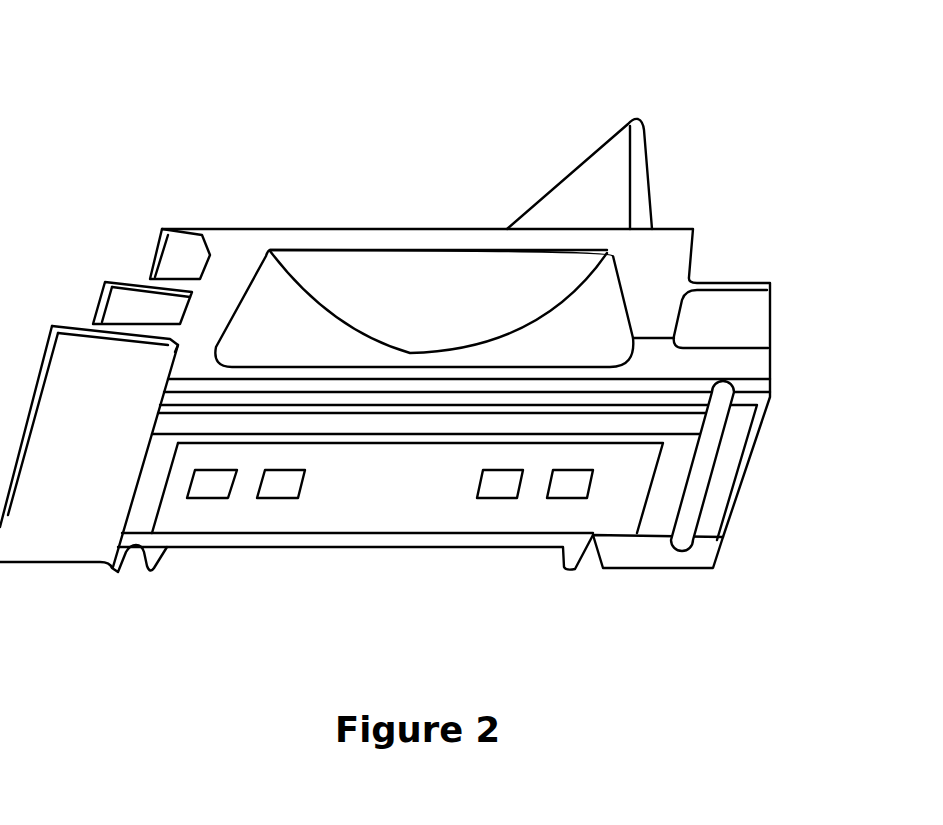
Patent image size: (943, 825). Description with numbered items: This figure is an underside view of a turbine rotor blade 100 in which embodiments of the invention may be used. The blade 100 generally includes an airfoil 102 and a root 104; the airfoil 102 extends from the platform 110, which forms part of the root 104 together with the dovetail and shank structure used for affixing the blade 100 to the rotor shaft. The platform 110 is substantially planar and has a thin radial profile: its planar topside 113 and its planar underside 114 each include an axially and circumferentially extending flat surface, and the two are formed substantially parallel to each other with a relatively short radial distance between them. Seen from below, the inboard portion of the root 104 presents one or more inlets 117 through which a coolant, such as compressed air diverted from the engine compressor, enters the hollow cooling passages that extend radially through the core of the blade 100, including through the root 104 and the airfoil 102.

The turbine rotor blade 100 is at (150, 103).
The platform 110 is at (185, 217).
The topside 113 is at (318, 228).
The airfoil 102 is at (600, 173).
The underside 114 is at (452, 322).
The root 104 is at (777, 433).
The inlets 117 is at (210, 487).